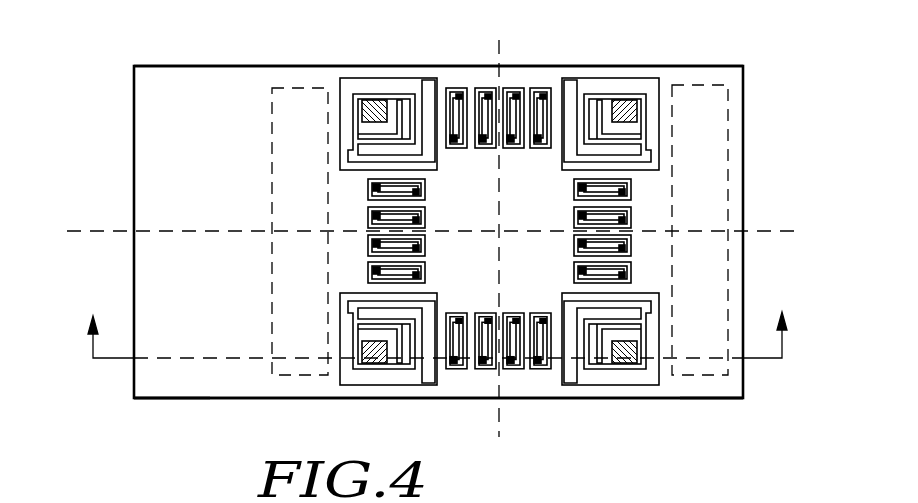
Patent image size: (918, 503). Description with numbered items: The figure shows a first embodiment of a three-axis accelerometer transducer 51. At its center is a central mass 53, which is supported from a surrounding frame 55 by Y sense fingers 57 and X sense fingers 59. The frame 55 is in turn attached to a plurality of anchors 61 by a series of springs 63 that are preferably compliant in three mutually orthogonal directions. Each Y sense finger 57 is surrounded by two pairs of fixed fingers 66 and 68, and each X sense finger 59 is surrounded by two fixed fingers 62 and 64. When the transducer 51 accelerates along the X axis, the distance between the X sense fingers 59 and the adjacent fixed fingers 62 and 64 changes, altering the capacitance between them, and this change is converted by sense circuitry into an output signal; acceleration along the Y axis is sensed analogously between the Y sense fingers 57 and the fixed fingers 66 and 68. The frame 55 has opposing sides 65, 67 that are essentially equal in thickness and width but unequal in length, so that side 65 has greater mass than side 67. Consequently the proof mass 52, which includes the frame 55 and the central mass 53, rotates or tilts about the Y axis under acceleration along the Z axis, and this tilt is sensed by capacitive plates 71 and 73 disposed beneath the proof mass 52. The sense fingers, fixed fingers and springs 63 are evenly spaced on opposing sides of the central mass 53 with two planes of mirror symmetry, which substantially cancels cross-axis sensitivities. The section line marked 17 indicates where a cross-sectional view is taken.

The transducer 51 is at (106, 47).
The proof mass 52 is at (300, 66).
The central mass 53 is at (481, 263).
The frame 55 is at (542, 398).
The Y sense fingers 57 is at (590, 203).
The X sense fingers 59 is at (470, 325).
The anchors 61 is at (375, 360).
The fixed fingers 62 is at (493, 132).
The springs 63 is at (563, 80).
The fixed fingers 64 is at (522, 132).
The side 65 is at (200, 418).
The fixed fingers 66 is at (600, 232).
The side 67 is at (713, 418).
The fixed fingers 68 is at (587, 253).
The capacitive plate 71 is at (272, 203).
The capacitive plate 73 is at (728, 158).
The section line 17- 17 is at (436, 316).